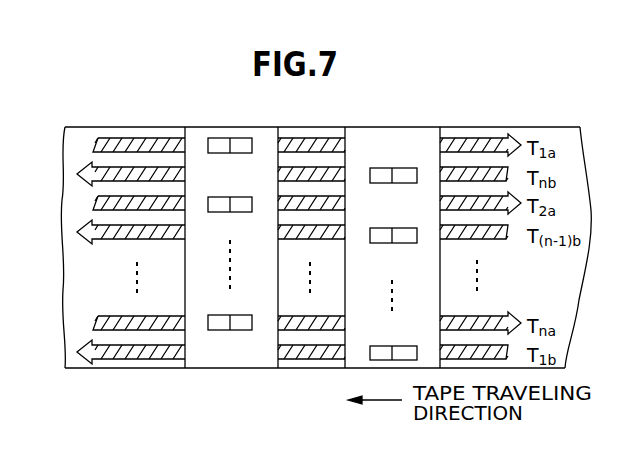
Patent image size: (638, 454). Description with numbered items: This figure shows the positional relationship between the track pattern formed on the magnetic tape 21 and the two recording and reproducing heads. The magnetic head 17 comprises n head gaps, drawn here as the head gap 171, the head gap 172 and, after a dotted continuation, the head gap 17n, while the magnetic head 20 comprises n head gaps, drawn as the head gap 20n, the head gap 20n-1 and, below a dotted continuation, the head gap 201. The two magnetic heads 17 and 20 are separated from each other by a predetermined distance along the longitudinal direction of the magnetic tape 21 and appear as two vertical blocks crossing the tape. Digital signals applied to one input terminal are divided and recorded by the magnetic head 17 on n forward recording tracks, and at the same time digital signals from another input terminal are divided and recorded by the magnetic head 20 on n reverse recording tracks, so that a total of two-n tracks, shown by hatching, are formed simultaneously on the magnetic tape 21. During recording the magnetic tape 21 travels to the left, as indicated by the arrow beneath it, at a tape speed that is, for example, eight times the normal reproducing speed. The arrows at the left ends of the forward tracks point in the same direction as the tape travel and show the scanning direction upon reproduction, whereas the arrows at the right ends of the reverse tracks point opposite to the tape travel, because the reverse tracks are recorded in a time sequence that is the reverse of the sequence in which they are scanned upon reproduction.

The magnetic tape 21 is at (81, 128).
The magnetic head 17 is at (243, 127).
The magnetic head 20 is at (384, 132).
The head gap 171 is at (228, 148).
The head gap 172 is at (226, 207).
The head gap 17n is at (226, 325).
The head gap 20n is at (389, 177).
The head gap 20n-1 is at (389, 237).
The head gap 201 is at (386, 356).